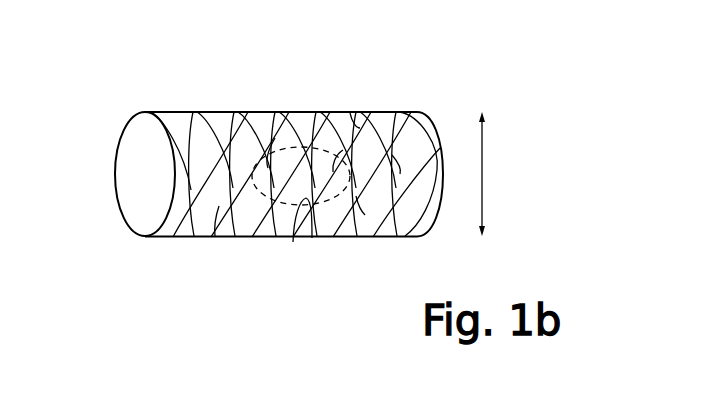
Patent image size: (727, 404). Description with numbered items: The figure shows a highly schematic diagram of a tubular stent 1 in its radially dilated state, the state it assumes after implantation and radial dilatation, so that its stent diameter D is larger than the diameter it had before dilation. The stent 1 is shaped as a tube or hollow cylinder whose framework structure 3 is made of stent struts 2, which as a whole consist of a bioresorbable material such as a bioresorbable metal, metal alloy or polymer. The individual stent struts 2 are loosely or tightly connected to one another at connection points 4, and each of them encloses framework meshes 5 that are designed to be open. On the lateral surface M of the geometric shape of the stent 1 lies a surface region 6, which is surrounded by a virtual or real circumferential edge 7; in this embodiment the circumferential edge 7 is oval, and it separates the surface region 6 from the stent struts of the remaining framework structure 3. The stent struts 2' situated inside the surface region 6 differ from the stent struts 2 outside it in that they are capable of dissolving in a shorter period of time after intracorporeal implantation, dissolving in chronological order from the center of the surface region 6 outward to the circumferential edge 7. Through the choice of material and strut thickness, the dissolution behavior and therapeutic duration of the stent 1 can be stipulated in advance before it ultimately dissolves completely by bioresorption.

The tubular stent 1 is at (116, 111).
The stent struts 2 is at (295, 165).
The stent struts inside the surface region 2' is at (308, 178).
The framework structure 3 is at (409, 249).
The connection points 4 is at (214, 146).
The framework meshes 5 is at (198, 238).
The surface region 6 is at (328, 147).
The circumferential edge 7 is at (263, 204).
The lateral surface M is at (404, 104).
The stent diameter D is at (496, 174).